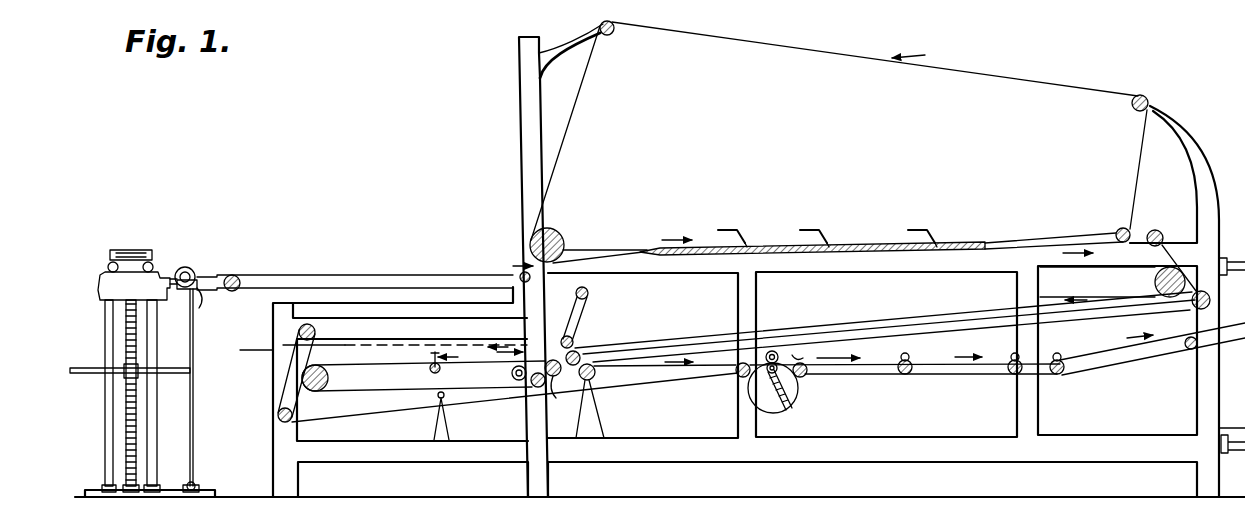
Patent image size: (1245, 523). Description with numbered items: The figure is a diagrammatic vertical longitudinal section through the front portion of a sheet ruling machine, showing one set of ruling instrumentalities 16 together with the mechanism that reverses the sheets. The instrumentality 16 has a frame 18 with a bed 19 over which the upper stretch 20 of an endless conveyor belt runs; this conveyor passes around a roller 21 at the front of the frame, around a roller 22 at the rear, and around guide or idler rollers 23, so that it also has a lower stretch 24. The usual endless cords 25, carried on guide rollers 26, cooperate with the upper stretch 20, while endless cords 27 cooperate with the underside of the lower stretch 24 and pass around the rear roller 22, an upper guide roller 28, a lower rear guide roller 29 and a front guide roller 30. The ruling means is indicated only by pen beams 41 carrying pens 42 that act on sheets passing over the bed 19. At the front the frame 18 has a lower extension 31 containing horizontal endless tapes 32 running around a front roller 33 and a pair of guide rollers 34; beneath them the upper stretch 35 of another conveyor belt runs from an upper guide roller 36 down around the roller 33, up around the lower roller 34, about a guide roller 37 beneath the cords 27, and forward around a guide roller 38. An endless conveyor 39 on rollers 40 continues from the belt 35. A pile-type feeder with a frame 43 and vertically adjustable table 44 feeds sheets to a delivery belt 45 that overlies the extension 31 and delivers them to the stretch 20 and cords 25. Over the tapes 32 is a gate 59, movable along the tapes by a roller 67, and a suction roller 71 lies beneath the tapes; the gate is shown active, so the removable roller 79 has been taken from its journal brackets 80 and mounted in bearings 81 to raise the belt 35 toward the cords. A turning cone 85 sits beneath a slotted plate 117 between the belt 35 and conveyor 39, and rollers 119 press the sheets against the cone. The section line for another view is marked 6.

The section line 6 is at (252, 362).
The ruling instrumentality 16 is at (799, 188).
The frame 18 is at (812, 455).
The bed 19 is at (850, 252).
The upper stretch 20 is at (1003, 258).
The roller 21 is at (589, 290).
The roller 22 is at (1155, 284).
The guide or idler rollers 23 is at (588, 300).
The lower stretch 24 is at (868, 323).
The endless cords 25 is at (593, 133).
The guide rollers 26 is at (615, 33).
The endless cords 27 is at (927, 326).
The upper guide roller 28 is at (1153, 230).
The lower rear guide roller 29 is at (1193, 308).
The front guide roller 30 is at (581, 358).
The extension 31 is at (418, 458).
The endless tapes 32 is at (423, 369).
The front roller 33 is at (330, 378).
The guide rollers 34 is at (551, 387).
The upper stretch of endless conveyor belt 35 is at (366, 393).
The upper guide roller 36 is at (308, 327).
The guide roller 37 is at (738, 376).
The guide roller 38 is at (278, 415).
The endless conveyor 39 is at (972, 374).
The rollers 40 is at (804, 377).
The pen beams 41 is at (826, 226).
The pens 42 is at (854, 236).
The frame 43 is at (160, 435).
The vertically adjustable table 44 is at (182, 372).
The delivery belt 45 is at (272, 278).
The gate 59 is at (430, 357).
The roller 67 is at (440, 370).
The suction roller 71 is at (512, 373).
The removable roller 79 is at (596, 373).
The journal brackets 80 is at (470, 416).
The bearings 81 is at (597, 406).
The turning cone 85 is at (797, 398).
The plate 117 is at (919, 349).
The rollers 119 is at (776, 350).